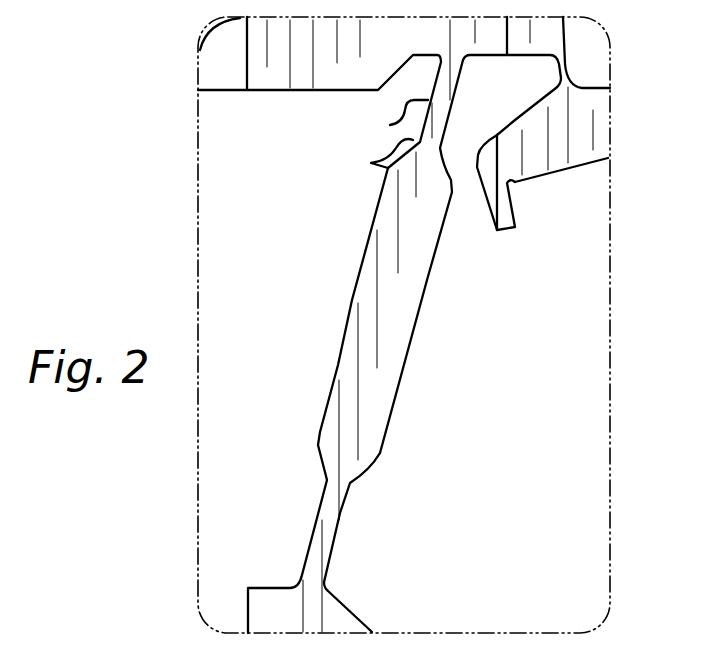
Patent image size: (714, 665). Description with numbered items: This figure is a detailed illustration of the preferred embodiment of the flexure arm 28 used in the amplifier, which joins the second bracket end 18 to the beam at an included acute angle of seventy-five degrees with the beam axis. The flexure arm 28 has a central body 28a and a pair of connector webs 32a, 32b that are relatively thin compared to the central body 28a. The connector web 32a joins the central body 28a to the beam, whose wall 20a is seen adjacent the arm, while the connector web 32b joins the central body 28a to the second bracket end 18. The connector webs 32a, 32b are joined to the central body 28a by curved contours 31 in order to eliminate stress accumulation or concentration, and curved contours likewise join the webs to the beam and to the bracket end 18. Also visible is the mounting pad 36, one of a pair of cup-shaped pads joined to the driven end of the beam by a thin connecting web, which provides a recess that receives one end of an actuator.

The housing wall 20a is at (289, 93).
The connector web 32a is at (390, 125).
The curved contour 31 is at (371, 163).
The flexure arm 28 is at (337, 364).
The central body 28a is at (412, 333).
The connector web 32b is at (338, 546).
The second bracket end 18 is at (333, 612).
The mounting pad 36 is at (553, 177).